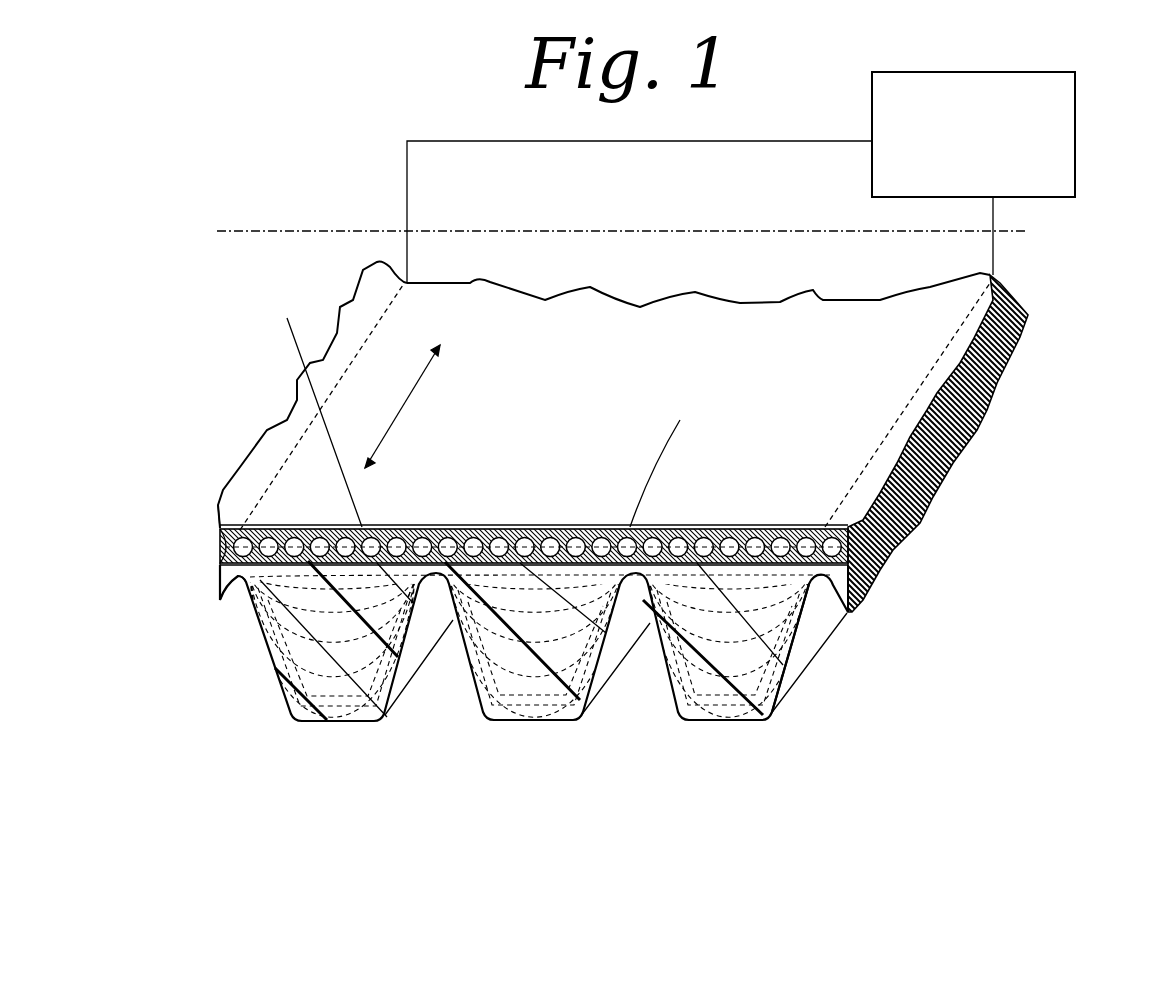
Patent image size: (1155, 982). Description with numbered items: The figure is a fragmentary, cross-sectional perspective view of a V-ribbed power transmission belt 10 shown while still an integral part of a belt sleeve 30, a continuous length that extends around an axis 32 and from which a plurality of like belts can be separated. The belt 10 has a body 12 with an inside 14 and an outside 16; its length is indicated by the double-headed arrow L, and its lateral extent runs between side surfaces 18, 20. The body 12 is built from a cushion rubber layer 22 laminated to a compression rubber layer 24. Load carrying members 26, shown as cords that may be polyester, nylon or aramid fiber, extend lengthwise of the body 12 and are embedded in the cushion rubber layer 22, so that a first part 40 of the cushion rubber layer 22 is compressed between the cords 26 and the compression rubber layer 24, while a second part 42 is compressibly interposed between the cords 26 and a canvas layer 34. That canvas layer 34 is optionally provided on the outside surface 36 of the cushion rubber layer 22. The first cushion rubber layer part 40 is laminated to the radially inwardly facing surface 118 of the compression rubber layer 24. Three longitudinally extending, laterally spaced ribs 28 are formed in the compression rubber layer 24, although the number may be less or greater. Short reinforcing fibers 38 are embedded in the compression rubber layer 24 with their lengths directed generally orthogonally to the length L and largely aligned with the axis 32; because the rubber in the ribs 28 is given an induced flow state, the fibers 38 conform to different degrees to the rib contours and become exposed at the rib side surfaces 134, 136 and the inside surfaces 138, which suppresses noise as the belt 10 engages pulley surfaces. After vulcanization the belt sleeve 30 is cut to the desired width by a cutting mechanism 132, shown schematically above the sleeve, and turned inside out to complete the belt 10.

The power transmission belt 10 is at (1032, 262).
The body 12 is at (236, 585).
The inside 14 is at (730, 722).
The outside 16 is at (593, 527).
The side surface 18 is at (290, 440).
The side surface 20 is at (1000, 385).
The cushion rubber layer 22 is at (905, 545).
The compression rubber layer 24 is at (800, 663).
The load carrying members 26 is at (433, 527).
The ribs 28 is at (358, 725).
The belt sleeve 30 is at (916, 420).
The axis 32 is at (700, 228).
The canvas layer 34 is at (530, 330).
The outside surface 36 is at (680, 420).
The reinforcing fibers 38 is at (522, 690).
The first part of cushion rubber layer 40 is at (220, 567).
The second part of cushion rubber layer 42 is at (240, 527).
The radially inwardly facing surface 118 is at (287, 319).
The cutting mechanism 132 is at (994, 186).
The rib side surface 134 is at (283, 698).
The rib side surface 136 is at (413, 648).
The inside surface 138 is at (320, 725).
The length L is at (400, 412).